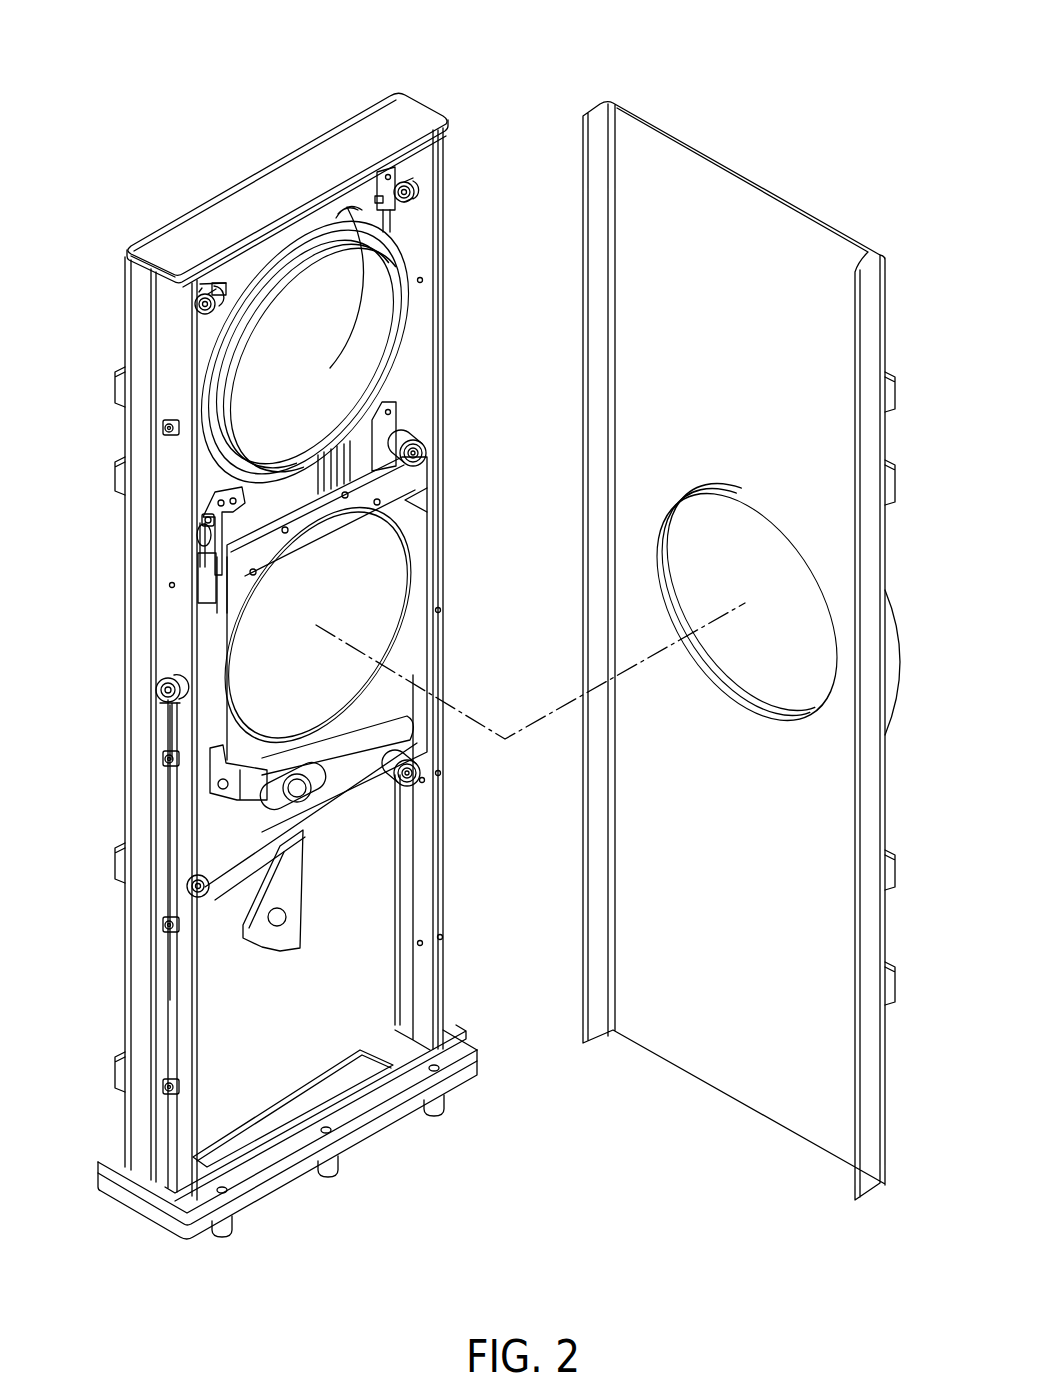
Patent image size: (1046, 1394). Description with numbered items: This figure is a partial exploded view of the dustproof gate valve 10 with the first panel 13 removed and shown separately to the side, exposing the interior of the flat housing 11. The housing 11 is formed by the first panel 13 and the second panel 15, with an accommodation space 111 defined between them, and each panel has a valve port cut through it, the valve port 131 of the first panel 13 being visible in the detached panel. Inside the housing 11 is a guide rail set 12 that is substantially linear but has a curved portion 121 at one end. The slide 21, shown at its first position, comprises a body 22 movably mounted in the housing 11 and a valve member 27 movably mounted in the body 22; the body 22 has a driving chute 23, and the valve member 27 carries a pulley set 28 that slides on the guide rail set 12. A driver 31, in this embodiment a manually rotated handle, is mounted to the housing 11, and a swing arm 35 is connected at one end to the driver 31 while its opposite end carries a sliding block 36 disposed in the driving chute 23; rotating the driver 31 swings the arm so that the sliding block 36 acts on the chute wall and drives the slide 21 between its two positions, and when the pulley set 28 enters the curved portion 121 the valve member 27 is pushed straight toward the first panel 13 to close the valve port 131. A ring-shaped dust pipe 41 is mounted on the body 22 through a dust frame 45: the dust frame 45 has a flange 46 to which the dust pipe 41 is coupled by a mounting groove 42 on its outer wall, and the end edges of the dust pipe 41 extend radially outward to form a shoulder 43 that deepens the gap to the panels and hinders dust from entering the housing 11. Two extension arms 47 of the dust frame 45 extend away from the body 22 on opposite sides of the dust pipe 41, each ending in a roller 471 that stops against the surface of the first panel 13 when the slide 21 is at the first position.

The dustproof gate valve 10 is at (523, 100).
The housing 11 is at (377, 80).
The accommodation space 111 is at (245, 1020).
The guide rail set 12 is at (168, 903).
The curved portion 121 is at (166, 680).
The first panel 13 is at (753, 177).
The valve port 131 is at (812, 577).
The second panel 15 is at (125, 311).
The slide 21 is at (440, 502).
The body 22 is at (400, 420).
The driving chute 23 is at (387, 773).
The valve member 27 is at (366, 576).
The pulley set 28 is at (168, 702).
The driver 31 is at (123, 913).
The swing arm 35 is at (307, 850).
The sliding block 36 is at (320, 777).
The dust pipe 41 is at (425, 297).
The mounting groove 42 is at (257, 257).
The shoulder 43 is at (345, 205).
The dust frame 45 is at (213, 472).
The flange 46 is at (223, 440).
The extension arm 47 is at (392, 223).
The roller 471 is at (410, 186).